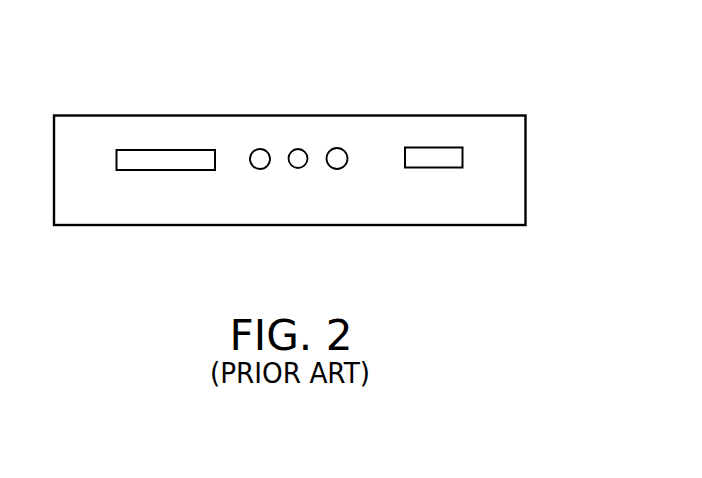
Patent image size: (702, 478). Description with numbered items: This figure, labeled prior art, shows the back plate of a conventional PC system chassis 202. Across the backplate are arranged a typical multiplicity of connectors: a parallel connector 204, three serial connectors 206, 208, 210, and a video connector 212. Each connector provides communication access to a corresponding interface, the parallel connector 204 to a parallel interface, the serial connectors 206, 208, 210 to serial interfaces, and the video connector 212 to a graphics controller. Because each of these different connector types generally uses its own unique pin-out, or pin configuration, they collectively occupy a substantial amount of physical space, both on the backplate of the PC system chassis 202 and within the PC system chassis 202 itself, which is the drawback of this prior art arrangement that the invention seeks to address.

The PC system chassis 202 is at (175, 115).
The parallel connector 204 is at (165, 170).
The serial connector 206 is at (260, 169).
The serial connector 208 is at (300, 148).
The serial connector 210 is at (336, 169).
The video connector 212 is at (436, 146).